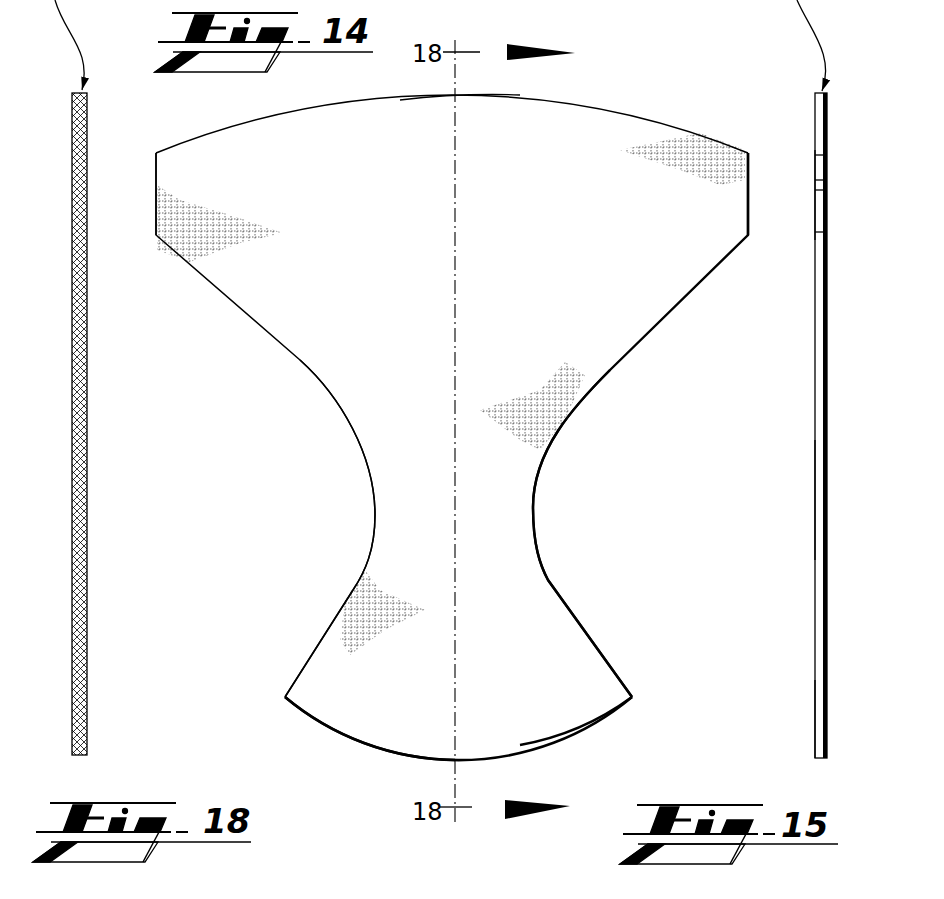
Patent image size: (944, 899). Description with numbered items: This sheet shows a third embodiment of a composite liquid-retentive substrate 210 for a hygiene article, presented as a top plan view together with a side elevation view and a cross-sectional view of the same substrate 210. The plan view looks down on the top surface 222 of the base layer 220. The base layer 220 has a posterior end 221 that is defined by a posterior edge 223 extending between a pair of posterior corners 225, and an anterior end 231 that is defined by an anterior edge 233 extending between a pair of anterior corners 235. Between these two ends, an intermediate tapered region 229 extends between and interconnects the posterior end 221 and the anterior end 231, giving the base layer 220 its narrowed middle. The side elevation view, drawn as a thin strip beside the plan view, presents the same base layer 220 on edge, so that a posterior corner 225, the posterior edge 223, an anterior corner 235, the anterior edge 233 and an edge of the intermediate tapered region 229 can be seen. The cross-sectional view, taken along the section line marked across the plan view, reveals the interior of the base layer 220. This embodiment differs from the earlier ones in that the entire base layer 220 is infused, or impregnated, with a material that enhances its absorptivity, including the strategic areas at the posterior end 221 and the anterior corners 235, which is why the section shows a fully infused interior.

In FIG. 14, the composite liquid-retentive substrate 210 is at (629, 423).
In FIG. 18, the composite liquid-retentive substrate 210 is at (93, 497).
In FIG. 15, the composite liquid-retentive substrate 210 is at (795, 482).
In FIG. 14, the base layer 220 is at (515, 510).
In FIG. 14, the posterior end 221 is at (633, 86).
In FIG. 14, the top surface 222 is at (396, 320).
In FIG. 15, the posterior edge 223 is at (814, 133).
In FIG. 14, the posterior corners 225 is at (154, 198).
In FIG. 15, the posterior corners 225 is at (808, 197).
In FIG. 14, the intermediate tapered region 229 is at (346, 456).
In FIG. 15, the intermediate tapered region 229 is at (814, 535).
In FIG. 14, the anterior end 231 is at (345, 743).
In FIG. 14, the anterior edge 233 is at (533, 750).
In FIG. 15, the anterior edge 233 is at (816, 731).
In FIG. 14, the anterior corners 235 is at (282, 697).
In FIG. 15, the anterior corners 235 is at (813, 699).